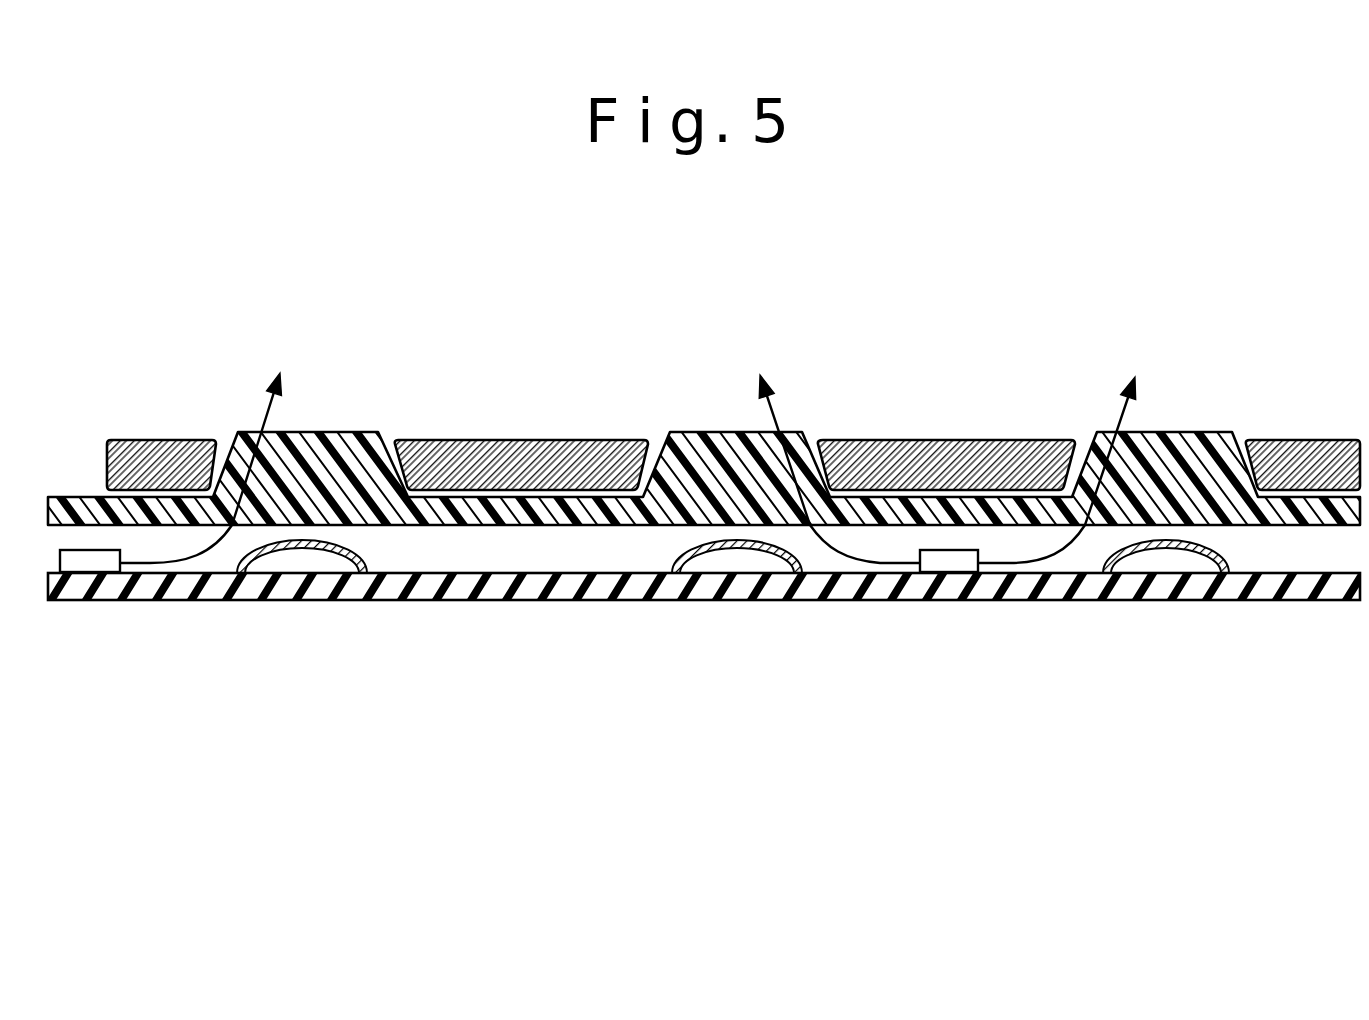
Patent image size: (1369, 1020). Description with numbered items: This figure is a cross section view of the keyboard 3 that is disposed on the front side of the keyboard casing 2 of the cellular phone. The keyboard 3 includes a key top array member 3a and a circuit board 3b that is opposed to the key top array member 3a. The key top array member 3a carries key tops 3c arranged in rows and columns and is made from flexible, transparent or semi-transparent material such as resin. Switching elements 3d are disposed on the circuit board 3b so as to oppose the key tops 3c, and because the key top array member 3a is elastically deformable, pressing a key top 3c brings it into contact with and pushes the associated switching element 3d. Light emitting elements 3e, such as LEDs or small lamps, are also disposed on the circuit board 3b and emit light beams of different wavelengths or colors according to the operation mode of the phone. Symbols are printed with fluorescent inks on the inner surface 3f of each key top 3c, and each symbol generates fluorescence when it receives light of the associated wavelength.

The keyboard casing 2 is at (535, 455).
The keyboard 3 is at (1112, 695).
The key top array member 3a is at (684, 508).
The circuit board 3b is at (1237, 600).
The key tops 3c is at (322, 450).
The switching elements 3d is at (327, 550).
The light emitting elements 3e is at (87, 560).
The inner surface 3f is at (360, 527).